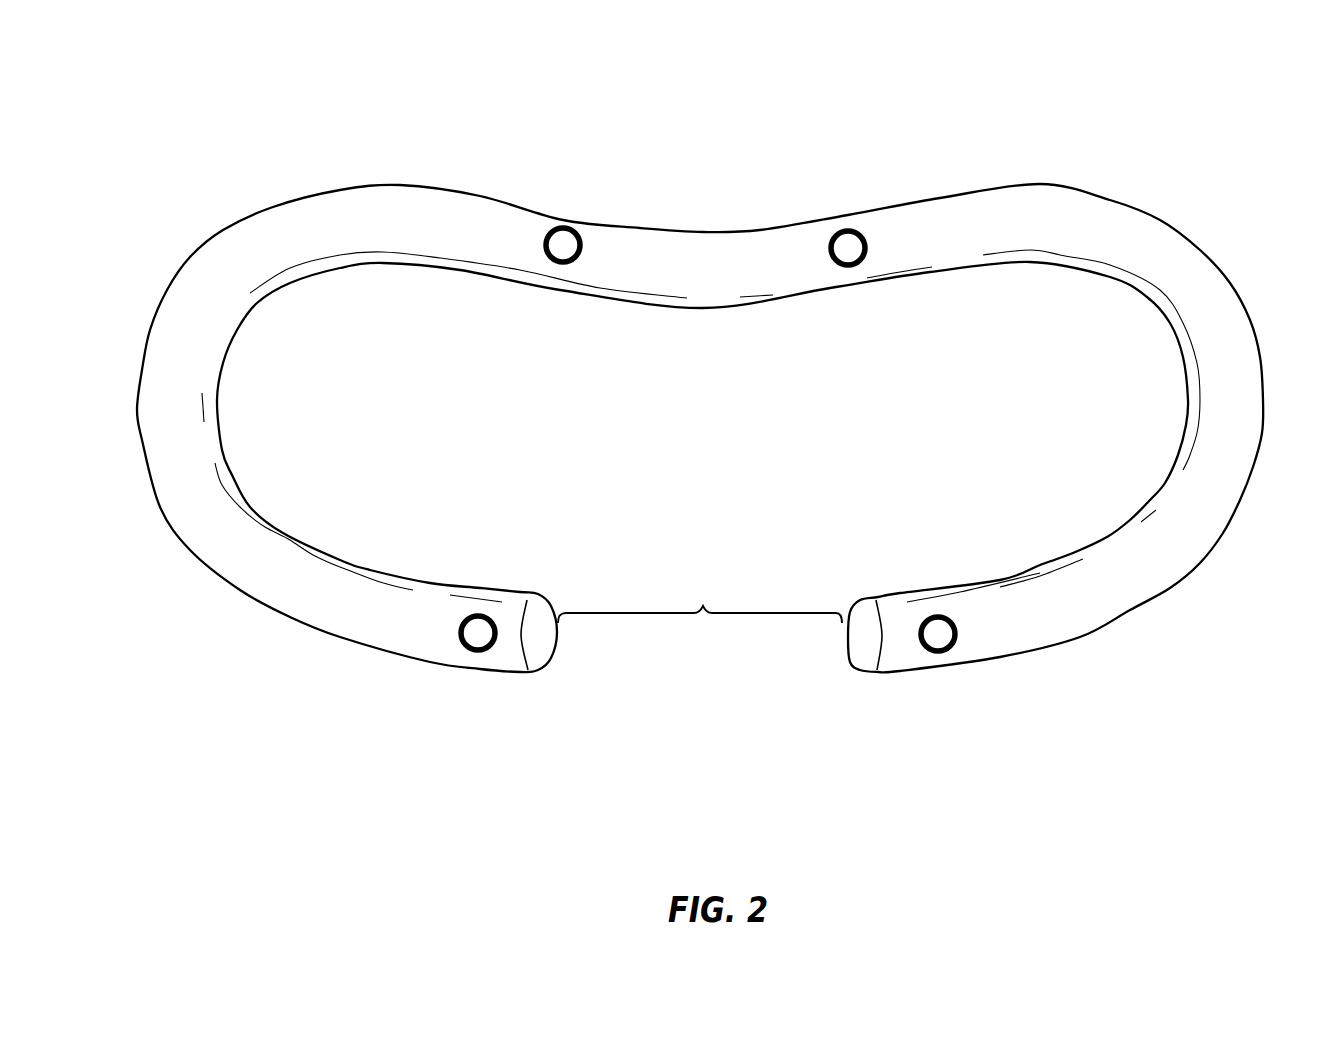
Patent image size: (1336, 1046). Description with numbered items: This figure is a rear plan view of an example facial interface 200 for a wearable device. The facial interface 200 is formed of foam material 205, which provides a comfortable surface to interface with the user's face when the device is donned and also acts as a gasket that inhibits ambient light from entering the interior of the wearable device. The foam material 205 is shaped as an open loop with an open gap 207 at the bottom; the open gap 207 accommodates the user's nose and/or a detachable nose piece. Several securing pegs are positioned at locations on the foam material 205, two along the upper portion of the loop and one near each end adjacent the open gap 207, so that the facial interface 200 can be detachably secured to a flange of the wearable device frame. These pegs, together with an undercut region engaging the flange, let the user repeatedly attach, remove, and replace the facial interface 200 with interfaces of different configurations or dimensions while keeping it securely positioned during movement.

The facial interface 200 is at (346, 70).
The foam material 205 is at (268, 208).
The open gap 207 is at (700, 603).